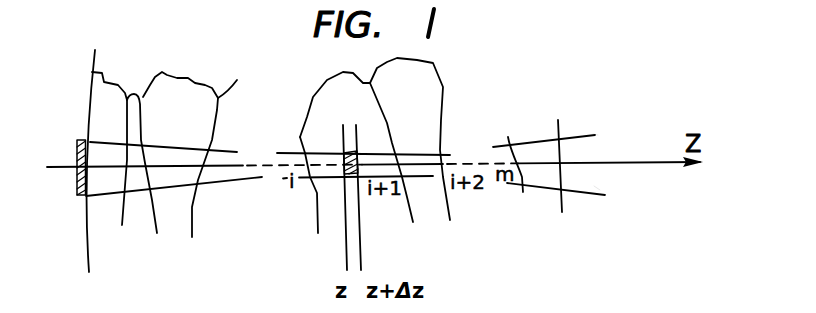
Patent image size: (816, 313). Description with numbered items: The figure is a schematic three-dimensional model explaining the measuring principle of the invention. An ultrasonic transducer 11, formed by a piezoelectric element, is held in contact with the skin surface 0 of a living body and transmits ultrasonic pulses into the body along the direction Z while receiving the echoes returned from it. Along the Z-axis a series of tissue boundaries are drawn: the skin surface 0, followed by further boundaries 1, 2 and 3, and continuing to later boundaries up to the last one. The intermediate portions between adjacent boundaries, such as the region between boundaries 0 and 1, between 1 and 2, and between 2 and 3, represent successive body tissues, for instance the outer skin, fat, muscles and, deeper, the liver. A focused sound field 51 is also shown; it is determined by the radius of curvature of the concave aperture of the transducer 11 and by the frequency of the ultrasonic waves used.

The ultrasonic transducer 11 is at (77, 140).
The skin surface 0 is at (172, 176).
The boundary of body tissues 1 is at (124, 152).
The boundary of body tissues 2 is at (134, 150).
The boundary of body tissues 3 is at (190, 154).
The focused sound field 51 is at (598, 183).